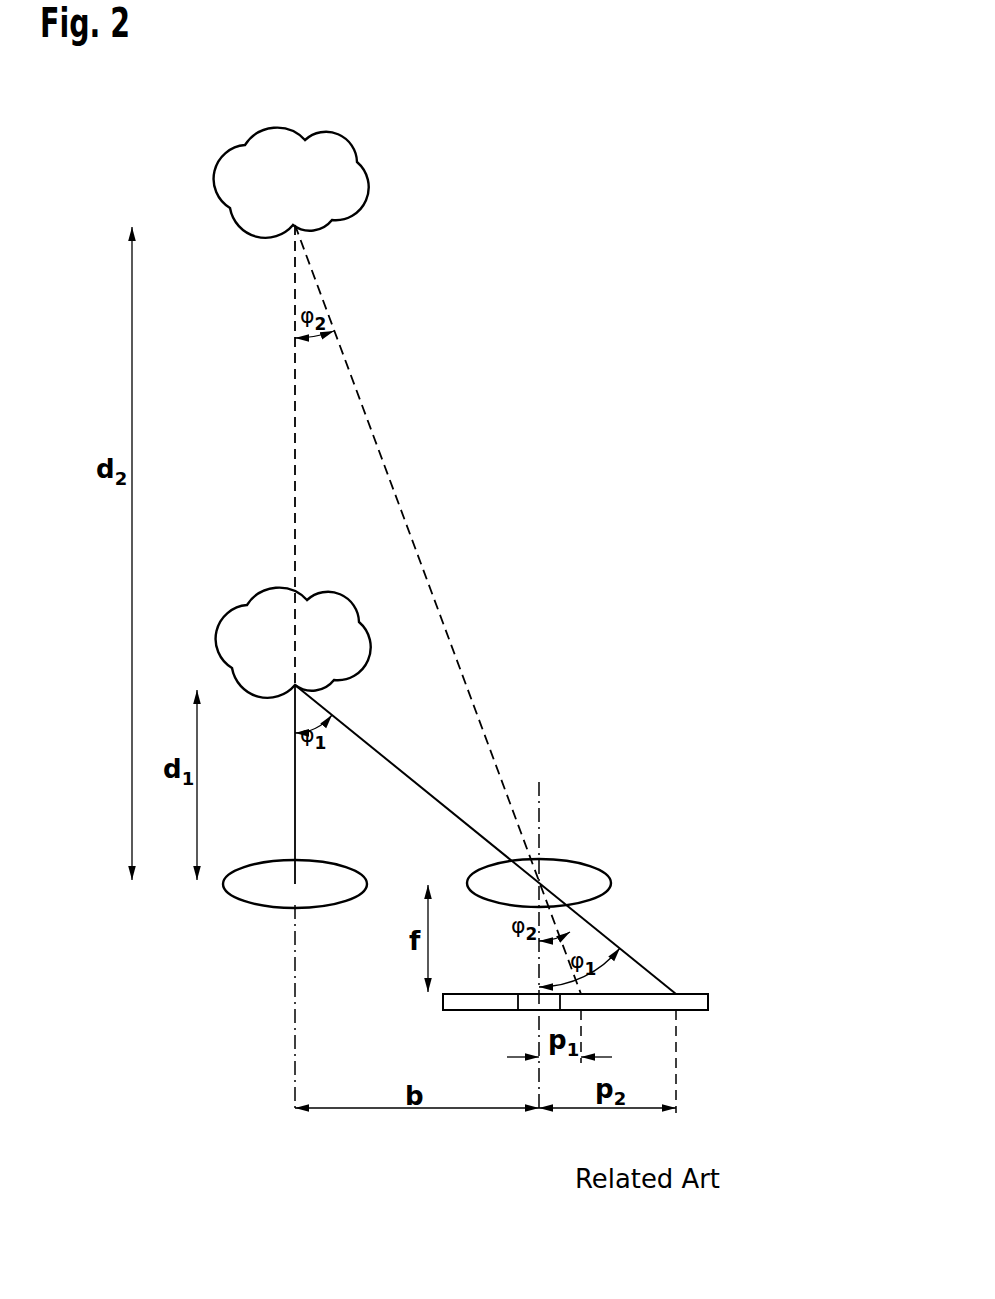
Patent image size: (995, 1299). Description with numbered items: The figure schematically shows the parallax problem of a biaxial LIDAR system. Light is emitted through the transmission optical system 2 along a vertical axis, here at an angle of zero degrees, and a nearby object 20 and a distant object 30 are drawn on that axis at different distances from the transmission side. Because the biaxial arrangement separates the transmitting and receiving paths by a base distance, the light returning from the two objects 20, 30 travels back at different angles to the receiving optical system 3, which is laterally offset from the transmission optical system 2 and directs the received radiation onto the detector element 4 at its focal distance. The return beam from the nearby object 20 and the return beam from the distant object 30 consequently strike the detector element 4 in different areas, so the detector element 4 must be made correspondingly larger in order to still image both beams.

The distant object 30 is at (260, 132).
The nearby object 20 is at (258, 592).
The transmission optical system 2 is at (252, 904).
The receiving optical system 3 is at (582, 860).
The detector element 4 is at (708, 1002).